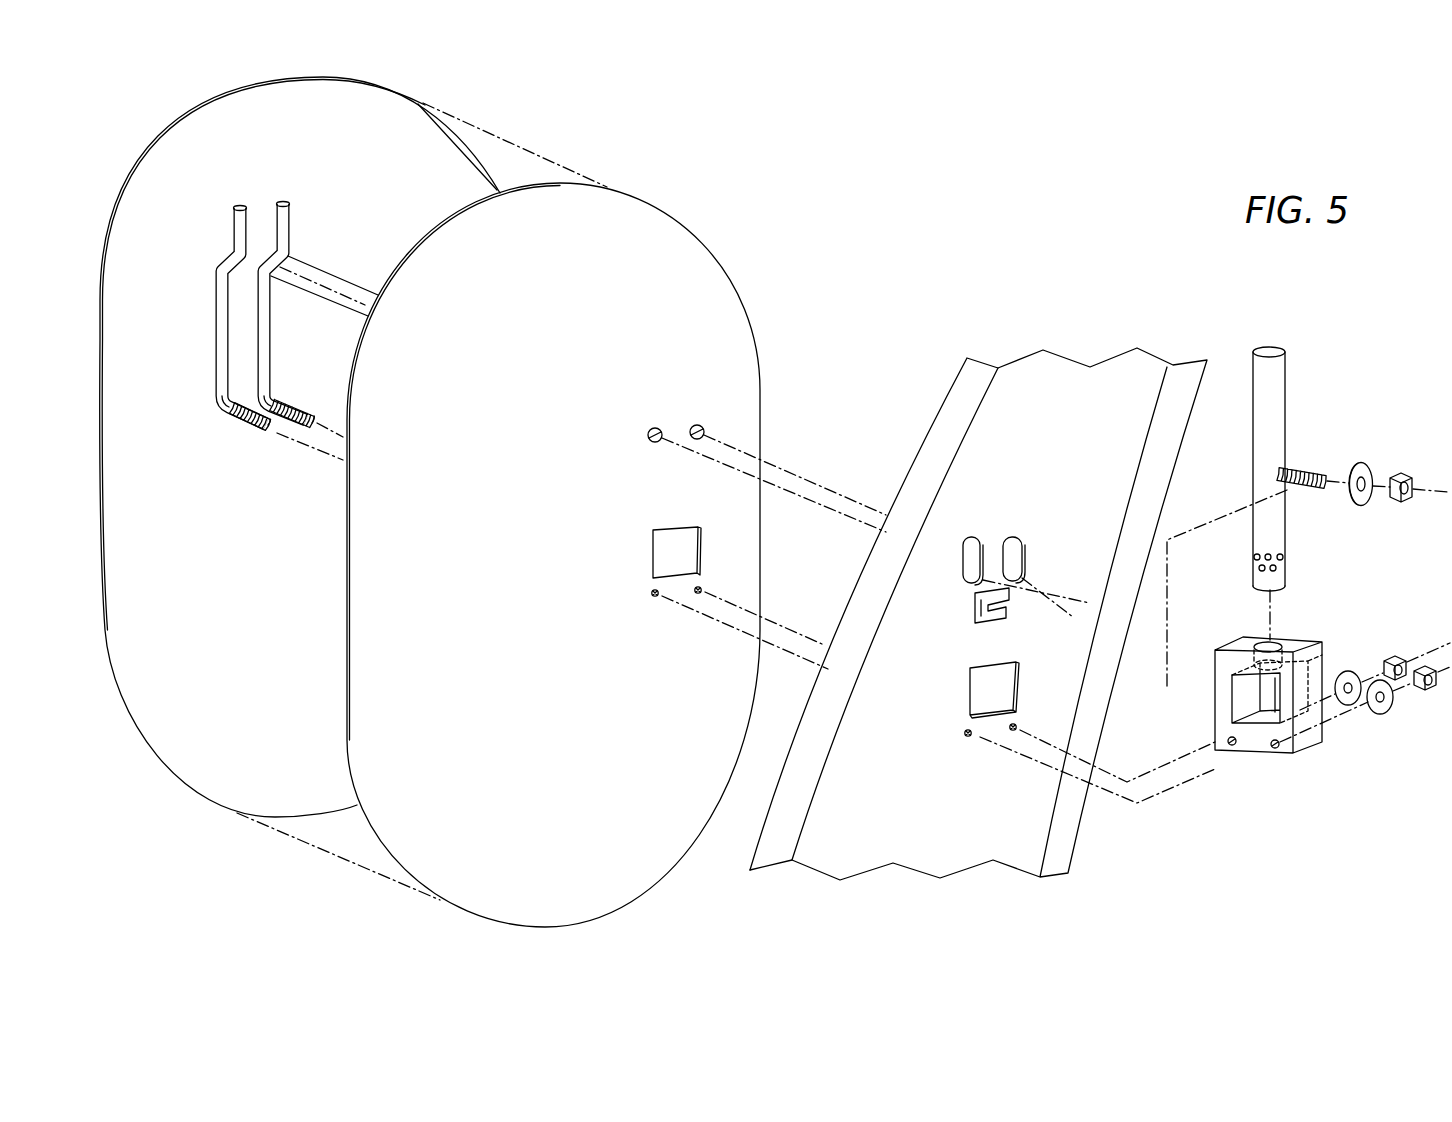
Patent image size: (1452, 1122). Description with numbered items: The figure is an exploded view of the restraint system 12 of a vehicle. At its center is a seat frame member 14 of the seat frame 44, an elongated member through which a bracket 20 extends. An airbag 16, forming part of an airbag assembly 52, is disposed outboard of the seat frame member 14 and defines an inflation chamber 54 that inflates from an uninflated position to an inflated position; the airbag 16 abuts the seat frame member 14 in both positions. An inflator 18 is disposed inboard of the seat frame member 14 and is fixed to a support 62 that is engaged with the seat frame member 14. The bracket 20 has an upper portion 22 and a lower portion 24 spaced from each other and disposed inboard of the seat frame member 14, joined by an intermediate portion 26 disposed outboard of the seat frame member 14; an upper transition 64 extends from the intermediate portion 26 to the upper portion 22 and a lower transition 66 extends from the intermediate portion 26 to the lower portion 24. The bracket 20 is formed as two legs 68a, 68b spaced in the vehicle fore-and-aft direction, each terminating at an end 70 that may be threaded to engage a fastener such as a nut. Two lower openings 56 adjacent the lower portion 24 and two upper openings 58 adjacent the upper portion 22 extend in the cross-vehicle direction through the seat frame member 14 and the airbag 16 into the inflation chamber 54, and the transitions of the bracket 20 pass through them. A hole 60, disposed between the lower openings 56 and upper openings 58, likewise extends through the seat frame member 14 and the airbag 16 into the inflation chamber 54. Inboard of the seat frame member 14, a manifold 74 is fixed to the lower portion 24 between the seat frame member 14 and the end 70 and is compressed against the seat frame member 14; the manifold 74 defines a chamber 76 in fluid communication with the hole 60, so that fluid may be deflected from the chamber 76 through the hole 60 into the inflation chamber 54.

The restraint system 12 is at (1129, 166).
The seat frame member 14 is at (982, 614).
The airbag 16 is at (660, 203).
The inflator 18 is at (1287, 402).
The bracket 20 is at (302, 168).
The upper portion 22 is at (252, 281).
The lower portion 24 is at (266, 425).
The intermediate portion 26 is at (242, 314).
The seat frame 44 is at (905, 440).
The airbag assembly 52 is at (852, 246).
The inflation chamber 54 is at (412, 172).
The lower opening 56 is at (700, 586).
The upper opening 58 is at (696, 424).
The hole 60 is at (652, 548).
The support 62 is at (980, 633).
The upper transition 64 is at (230, 256).
The lower transition 66 is at (257, 403).
The leg 68a is at (240, 205).
The leg 68b is at (284, 201).
The end 70 is at (309, 421).
The manifold 74 is at (1278, 684).
The chamber 76 is at (1249, 699).